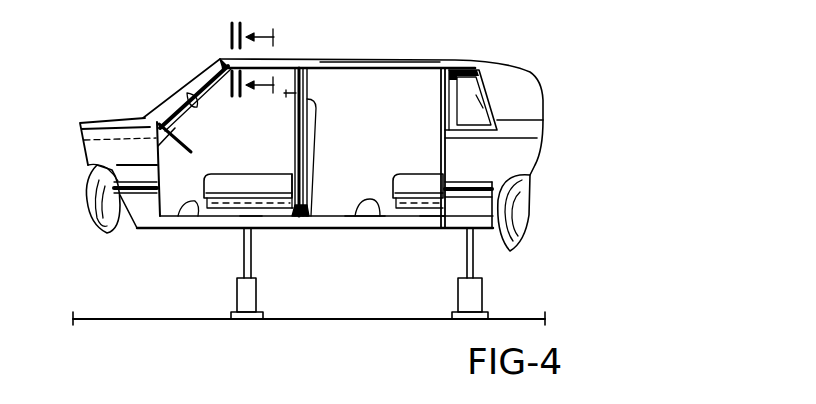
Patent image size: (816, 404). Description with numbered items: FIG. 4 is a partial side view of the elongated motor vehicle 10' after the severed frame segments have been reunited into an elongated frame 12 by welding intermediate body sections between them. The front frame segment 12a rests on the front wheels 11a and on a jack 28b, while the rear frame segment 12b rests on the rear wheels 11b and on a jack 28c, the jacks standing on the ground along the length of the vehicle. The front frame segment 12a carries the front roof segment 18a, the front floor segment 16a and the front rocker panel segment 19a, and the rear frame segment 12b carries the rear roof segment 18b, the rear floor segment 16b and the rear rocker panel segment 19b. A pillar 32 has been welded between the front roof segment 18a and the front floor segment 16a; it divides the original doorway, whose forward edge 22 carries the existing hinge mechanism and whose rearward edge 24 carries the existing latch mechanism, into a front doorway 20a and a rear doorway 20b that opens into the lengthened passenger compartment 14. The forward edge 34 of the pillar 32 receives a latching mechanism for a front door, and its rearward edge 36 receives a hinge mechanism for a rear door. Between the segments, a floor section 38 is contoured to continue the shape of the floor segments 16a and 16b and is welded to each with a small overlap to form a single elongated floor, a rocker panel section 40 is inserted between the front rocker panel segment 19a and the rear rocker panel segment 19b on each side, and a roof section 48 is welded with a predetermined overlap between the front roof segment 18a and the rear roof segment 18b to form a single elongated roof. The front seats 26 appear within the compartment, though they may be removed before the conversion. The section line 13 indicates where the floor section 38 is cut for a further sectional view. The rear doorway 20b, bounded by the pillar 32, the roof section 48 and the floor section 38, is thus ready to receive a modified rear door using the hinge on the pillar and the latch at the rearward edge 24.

The elongated motor vehicle 10' is at (404, 106).
The front wheels 11a is at (107, 240).
The rear wheels 11b is at (511, 240).
The elongated frame 12 is at (303, 68).
The front frame segment 12a is at (143, 120).
The rear frame segment 12b is at (538, 95).
The section line 13- 13 is at (342, 204).
The passenger compartment 14 is at (241, 135).
The front floor segment 16a is at (196, 215).
The rear floor segment 16b is at (360, 224).
The front roof segment 18a is at (224, 58).
The rear roof segment 18b is at (470, 58).
The front rocker panel segment 19a is at (278, 218).
The rear rocker panel segment 19b is at (432, 222).
The front doorway 20a is at (187, 93).
The rear doorway 20b is at (360, 68).
The forward edge of the doorway 22 is at (160, 168).
The rearward edge of the doorway 24 is at (440, 148).
The front seats 26 is at (280, 160).
The jack 28b is at (258, 298).
The jack 28c is at (483, 297).
The pillar 32 is at (318, 113).
The forward edge of the pillar 34 is at (308, 88).
The rearward edge of the pillar 36 is at (318, 138).
The floor section 38 is at (352, 214).
The rocker panel section 40 is at (357, 222).
The roof section 48 is at (328, 56).